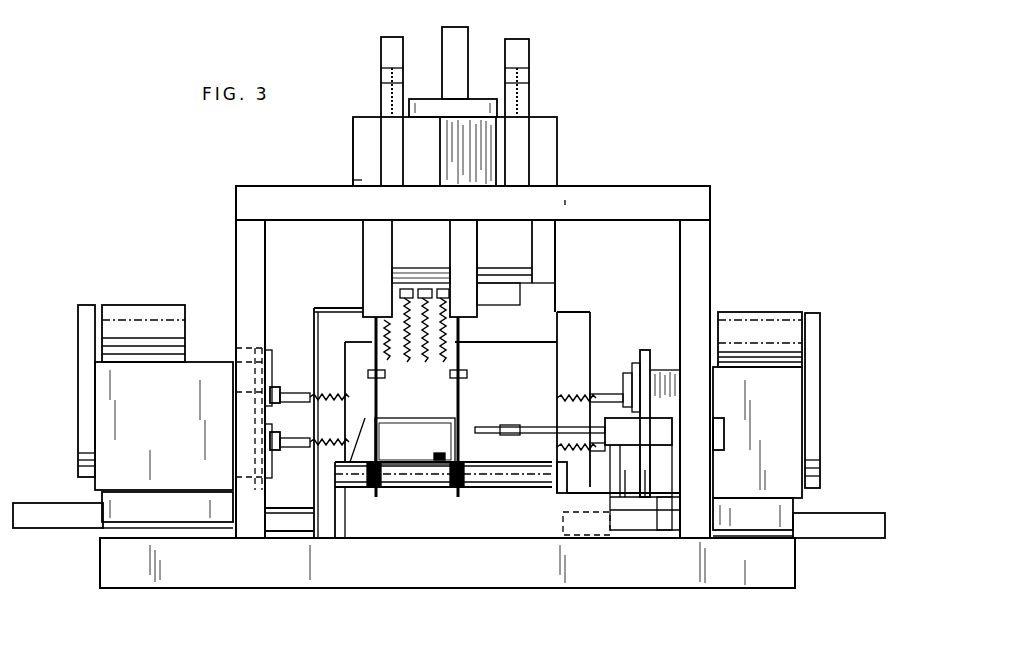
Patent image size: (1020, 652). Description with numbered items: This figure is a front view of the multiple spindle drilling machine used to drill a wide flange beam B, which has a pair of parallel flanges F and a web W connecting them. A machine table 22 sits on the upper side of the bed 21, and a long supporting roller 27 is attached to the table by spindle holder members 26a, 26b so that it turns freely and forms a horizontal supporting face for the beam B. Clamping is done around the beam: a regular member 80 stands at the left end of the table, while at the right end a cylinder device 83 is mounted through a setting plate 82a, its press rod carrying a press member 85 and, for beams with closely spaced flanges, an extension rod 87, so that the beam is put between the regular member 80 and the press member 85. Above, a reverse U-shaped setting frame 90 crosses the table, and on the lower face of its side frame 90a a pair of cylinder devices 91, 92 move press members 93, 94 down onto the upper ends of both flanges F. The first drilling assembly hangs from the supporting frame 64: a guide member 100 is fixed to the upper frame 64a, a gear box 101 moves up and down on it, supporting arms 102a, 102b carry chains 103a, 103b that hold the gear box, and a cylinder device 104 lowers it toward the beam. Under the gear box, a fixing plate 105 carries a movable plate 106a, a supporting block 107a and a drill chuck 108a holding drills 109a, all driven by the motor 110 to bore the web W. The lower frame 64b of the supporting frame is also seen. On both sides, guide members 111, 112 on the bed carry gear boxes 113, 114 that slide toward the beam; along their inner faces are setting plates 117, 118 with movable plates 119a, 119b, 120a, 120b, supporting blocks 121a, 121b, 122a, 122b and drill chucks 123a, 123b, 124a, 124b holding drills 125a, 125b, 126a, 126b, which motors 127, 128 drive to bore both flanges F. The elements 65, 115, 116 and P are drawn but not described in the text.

The bed 21 is at (108, 553).
The machine table 22 is at (490, 538).
The spindle holder member 26a is at (340, 491).
The spindle holder member 26b is at (560, 494).
The supporting roller 27 is at (426, 489).
The supporting frame 64 is at (353, 131).
The upper frame 64a is at (353, 181).
The lower frame 64b is at (314, 413).
The housing 65 is at (555, 346).
The regular member 80 is at (369, 428).
The setting plate 82a is at (578, 535).
The cylinder device 83 is at (724, 434).
The press member 85 is at (540, 413).
The extension rod 87 is at (512, 426).
The setting frame 90 is at (292, 187).
The side frame 90a is at (585, 181).
The cylinder device 91 is at (363, 241).
The cylinder device 92 is at (477, 240).
The press member 93 is at (386, 372).
The press member 94 is at (474, 372).
The guide member 100 is at (520, 300).
The gear box 101 is at (530, 131).
The supporting arm 102a is at (388, 52).
The supporting arm 102b is at (520, 52).
The chain 103a is at (390, 94).
The chain 103b is at (520, 94).
The cylinder device 104 is at (456, 29).
The fixing plate 105 is at (514, 282).
The movable plate 106a is at (536, 290).
The supporting block 107a is at (428, 288).
The drill chuck 108a is at (451, 402).
The drill 109a is at (426, 362).
The motor 110 is at (440, 149).
The guide member 111 is at (305, 538).
The guide member 112 is at (730, 536).
The gear box 113 is at (88, 462).
The gear box 114 is at (804, 428).
The left bar 115 is at (72, 512).
The right bar 116 is at (838, 513).
The setting plate 117 is at (255, 350).
The setting plate 118 is at (646, 360).
The movable plate 119a is at (244, 392).
The movable plate 119b is at (244, 477).
The movable plate 120a is at (634, 364).
The movable plate 120b is at (645, 498).
The supporting block 121a is at (289, 364).
The supporting block 121b is at (289, 464).
The supporting block 122a is at (624, 370).
The supporting block 122b is at (625, 498).
The drill chuck 123a is at (284, 386).
The drill chuck 123b is at (286, 450).
The drill chuck 124a is at (612, 394).
The drill chuck 124b is at (623, 474).
The drill 125a is at (334, 390).
The drill 125b is at (322, 440).
The drill 126a is at (560, 398).
The drill 126b is at (560, 447).
The motor 127 is at (148, 310).
The motor 128 is at (772, 312).
The flange F is at (412, 401).
The web W is at (432, 414).
The wide flange beam B is at (444, 446).
The pillar P is at (376, 489).